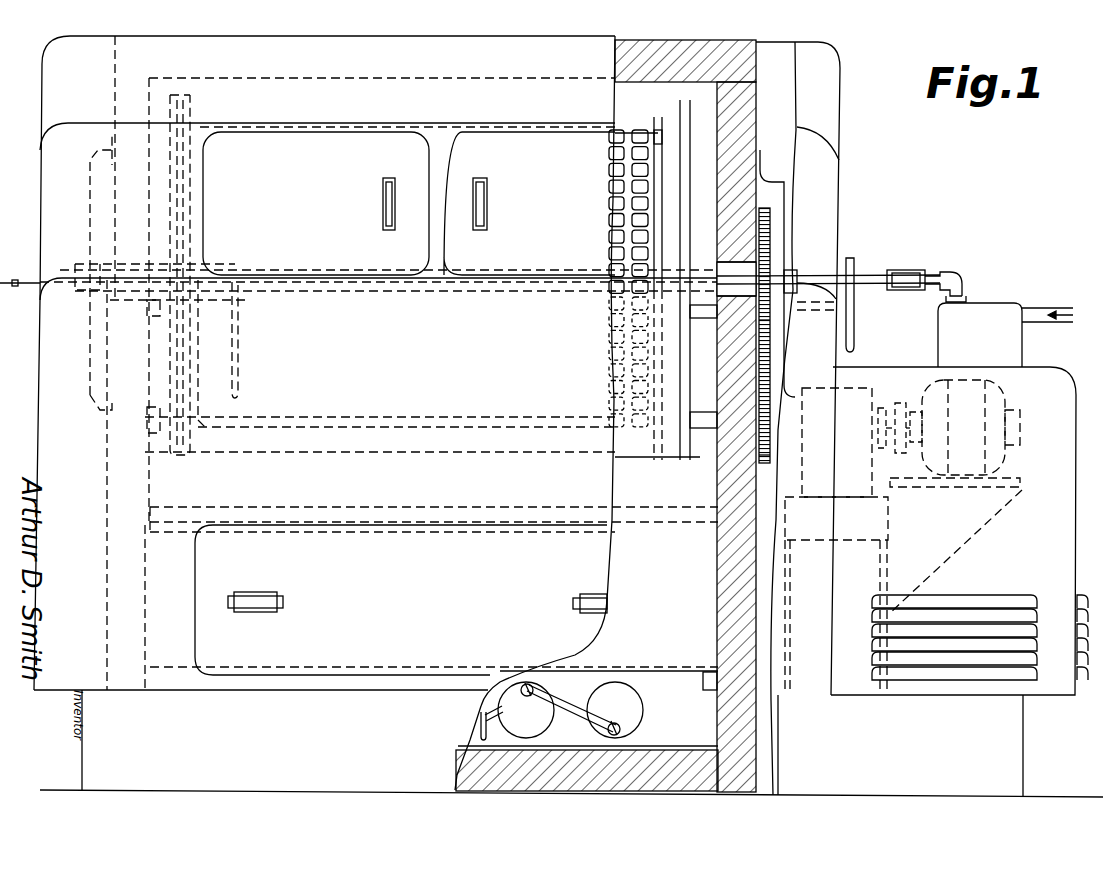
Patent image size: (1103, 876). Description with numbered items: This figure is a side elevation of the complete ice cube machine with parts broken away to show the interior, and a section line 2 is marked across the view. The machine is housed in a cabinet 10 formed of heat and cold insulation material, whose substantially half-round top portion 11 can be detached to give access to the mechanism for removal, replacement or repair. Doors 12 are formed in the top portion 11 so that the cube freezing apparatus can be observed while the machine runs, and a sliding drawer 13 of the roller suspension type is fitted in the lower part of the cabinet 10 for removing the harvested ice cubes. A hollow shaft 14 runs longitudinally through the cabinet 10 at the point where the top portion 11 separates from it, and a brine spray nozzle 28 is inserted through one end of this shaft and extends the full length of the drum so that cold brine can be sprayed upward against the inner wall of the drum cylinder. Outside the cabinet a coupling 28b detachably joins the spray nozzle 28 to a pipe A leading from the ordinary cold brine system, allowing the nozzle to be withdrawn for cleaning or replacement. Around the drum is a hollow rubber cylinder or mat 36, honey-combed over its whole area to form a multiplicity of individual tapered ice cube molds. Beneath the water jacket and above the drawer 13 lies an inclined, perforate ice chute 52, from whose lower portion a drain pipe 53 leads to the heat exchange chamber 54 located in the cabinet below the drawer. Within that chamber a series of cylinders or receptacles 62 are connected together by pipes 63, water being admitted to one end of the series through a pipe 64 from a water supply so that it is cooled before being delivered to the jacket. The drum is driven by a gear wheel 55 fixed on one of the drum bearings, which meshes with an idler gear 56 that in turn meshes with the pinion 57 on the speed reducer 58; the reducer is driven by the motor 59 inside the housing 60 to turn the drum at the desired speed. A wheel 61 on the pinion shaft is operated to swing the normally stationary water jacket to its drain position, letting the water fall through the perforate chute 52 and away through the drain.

The cabinet 10 is at (40, 334).
The half-round top portion 11 is at (628, 62).
The section line 2- 2 is at (708, 110).
The doors 12 is at (409, 203).
The sliding drawer 13 is at (401, 600).
The hollow shaft 14 is at (784, 275).
The brine spray nozzle 28 is at (862, 275).
The coupling 28b is at (905, 270).
The pipe A is at (950, 272).
The hollow rubber cylinder or mat 36 is at (629, 133).
The inclined ice chute 52 is at (645, 500).
The drain pipe 53 is at (480, 728).
The heat exchange chamber 54 is at (678, 678).
The gear wheel 55 is at (766, 213).
The idler gear 56 is at (768, 356).
The pinion 57 is at (770, 455).
The speed reducer 58 is at (872, 392).
The motor 59 is at (1008, 392).
The housing 60 is at (1080, 395).
The wheel 61 is at (855, 318).
The cylinders or receptacles 62 is at (616, 688).
The pipes 63 is at (566, 712).
The pipe 64 is at (692, 692).